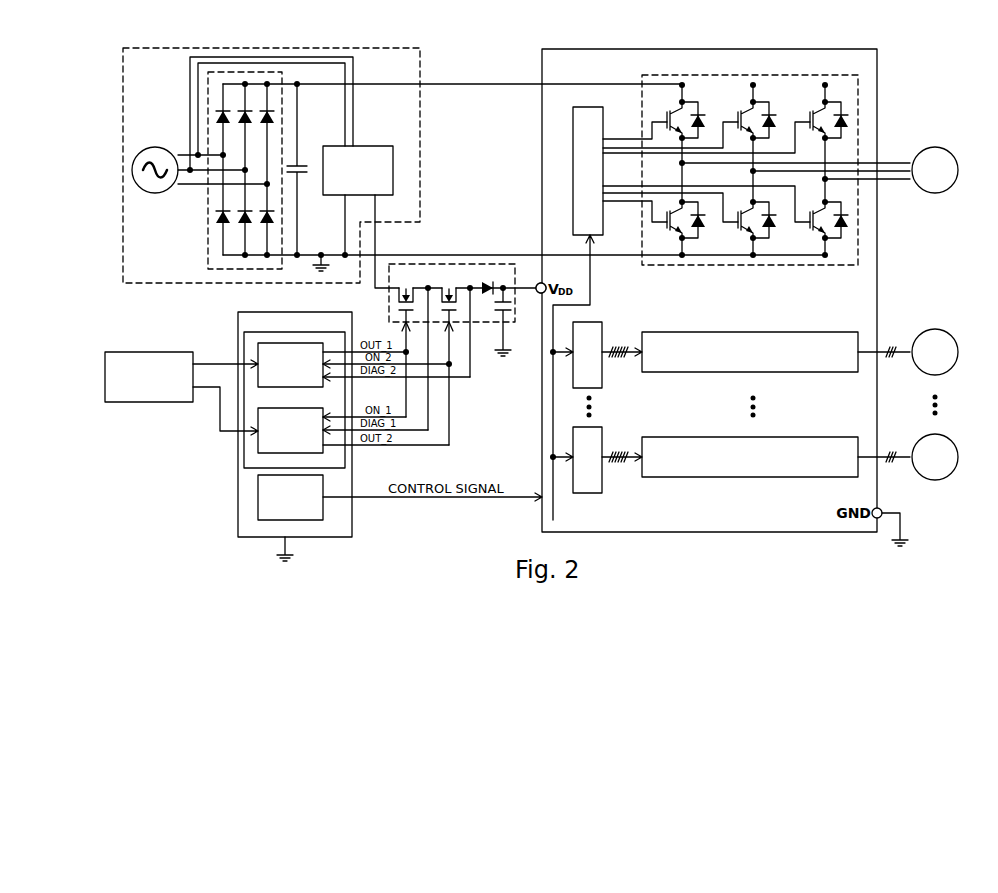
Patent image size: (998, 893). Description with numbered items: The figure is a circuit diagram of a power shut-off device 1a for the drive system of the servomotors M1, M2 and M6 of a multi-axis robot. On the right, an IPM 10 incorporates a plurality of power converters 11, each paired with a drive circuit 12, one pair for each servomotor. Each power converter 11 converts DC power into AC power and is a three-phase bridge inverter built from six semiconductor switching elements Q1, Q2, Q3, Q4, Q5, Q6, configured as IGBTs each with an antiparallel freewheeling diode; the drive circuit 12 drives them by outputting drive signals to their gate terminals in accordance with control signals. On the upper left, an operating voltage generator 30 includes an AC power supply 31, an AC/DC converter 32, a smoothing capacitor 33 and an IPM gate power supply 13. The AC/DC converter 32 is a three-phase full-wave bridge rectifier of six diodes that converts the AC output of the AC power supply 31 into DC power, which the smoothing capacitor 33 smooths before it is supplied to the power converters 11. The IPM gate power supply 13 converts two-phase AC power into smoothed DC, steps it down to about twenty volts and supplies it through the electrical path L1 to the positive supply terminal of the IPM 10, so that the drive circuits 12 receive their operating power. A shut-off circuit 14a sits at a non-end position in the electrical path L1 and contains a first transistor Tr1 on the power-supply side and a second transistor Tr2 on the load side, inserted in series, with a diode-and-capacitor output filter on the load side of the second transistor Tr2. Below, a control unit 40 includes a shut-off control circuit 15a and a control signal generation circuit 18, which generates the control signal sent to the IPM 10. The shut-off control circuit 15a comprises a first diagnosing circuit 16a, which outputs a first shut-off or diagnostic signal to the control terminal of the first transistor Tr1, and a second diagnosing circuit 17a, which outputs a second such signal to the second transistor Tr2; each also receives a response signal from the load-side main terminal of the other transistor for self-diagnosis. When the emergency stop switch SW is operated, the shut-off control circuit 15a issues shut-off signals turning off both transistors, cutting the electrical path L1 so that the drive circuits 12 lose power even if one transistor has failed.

The power shut-off device 1a is at (511, 43).
The IPM 10 is at (765, 49).
The power converter 11 is at (763, 267).
The drive circuit 12 is at (602, 120).
The IPM gate power supply 13 is at (373, 146).
The shut-off circuit 14a is at (466, 354).
The shut-off control circuit 15a is at (297, 332).
The first diagnosing circuit 16a is at (300, 387).
The second diagnosing circuit 17a is at (300, 453).
The control signal generation circuit 18 is at (303, 520).
The operating voltage generator 30 is at (332, 48).
The AC power supply 31 is at (165, 148).
The AC/DC converter 32 is at (208, 240).
The smoothing capacitor 33 is at (298, 164).
The control unit 40 is at (287, 312).
The electrical path L1 is at (377, 236).
The emergency stop switch SW is at (175, 352).
The first transistor Tr1 is at (406, 344).
The second transistor Tr2 is at (448, 358).
The semiconductor switching element Q1 is at (679, 123).
The semiconductor switching element Q2 is at (679, 223).
The semiconductor switching element Q3 is at (750, 123).
The semiconductor switching element Q4 is at (750, 223).
The semiconductor switching element Q5 is at (822, 123).
The semiconductor switching element Q6 is at (822, 223).
The servomotor M1 is at (955, 149).
The servomotor M2 is at (953, 332).
The servomotor M6 is at (953, 437).